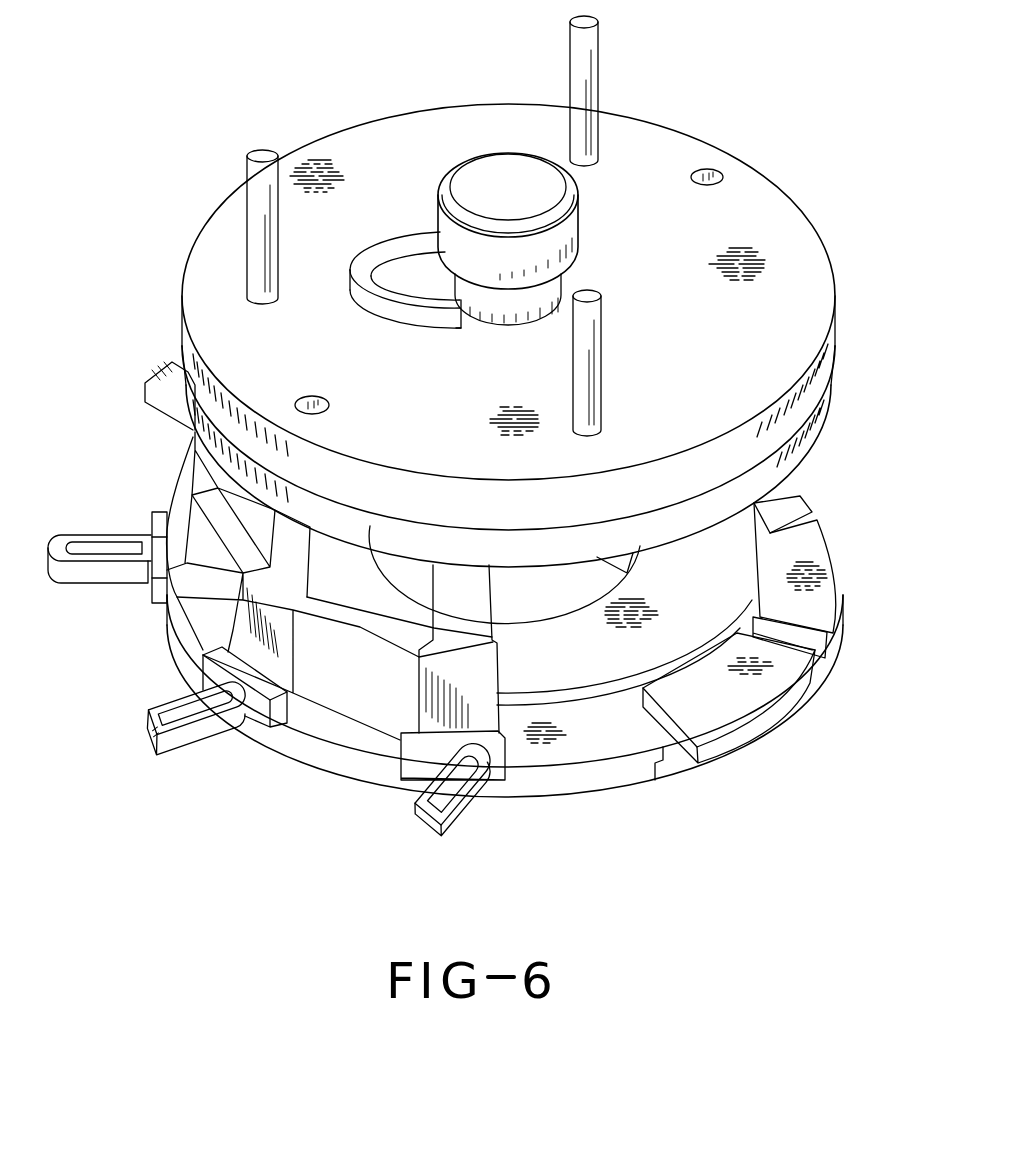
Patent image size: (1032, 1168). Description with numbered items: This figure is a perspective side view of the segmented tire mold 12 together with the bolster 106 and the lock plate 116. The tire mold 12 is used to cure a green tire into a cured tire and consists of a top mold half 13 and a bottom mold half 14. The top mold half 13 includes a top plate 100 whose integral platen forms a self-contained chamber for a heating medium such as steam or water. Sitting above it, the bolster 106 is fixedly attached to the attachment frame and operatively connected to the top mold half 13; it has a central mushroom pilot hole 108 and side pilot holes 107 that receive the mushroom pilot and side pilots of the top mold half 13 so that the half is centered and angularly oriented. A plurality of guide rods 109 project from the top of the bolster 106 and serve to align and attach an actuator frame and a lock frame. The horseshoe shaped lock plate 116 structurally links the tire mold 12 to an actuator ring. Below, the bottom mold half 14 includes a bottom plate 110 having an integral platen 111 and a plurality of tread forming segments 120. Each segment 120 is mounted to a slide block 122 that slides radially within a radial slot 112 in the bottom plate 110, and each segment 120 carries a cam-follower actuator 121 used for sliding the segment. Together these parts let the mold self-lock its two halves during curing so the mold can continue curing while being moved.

The tire mold 12 is at (286, 121).
The top mold half 13 is at (814, 430).
The bottom mold half 14 is at (790, 688).
The top plate 100 is at (790, 456).
The bolster 106 is at (788, 234).
The side pilot holes 107 is at (708, 170).
The central mushroom pilot hole 108 is at (568, 295).
The guide rods 109 is at (260, 238).
The bottom plate 110 is at (712, 698).
The platen 111 is at (583, 690).
The radial slot 112 is at (478, 792).
The lock plate 116 is at (378, 244).
The tread forming segments 120 is at (366, 676).
The cam-follower actuator 121 is at (62, 545).
The slide block 122 is at (262, 710).